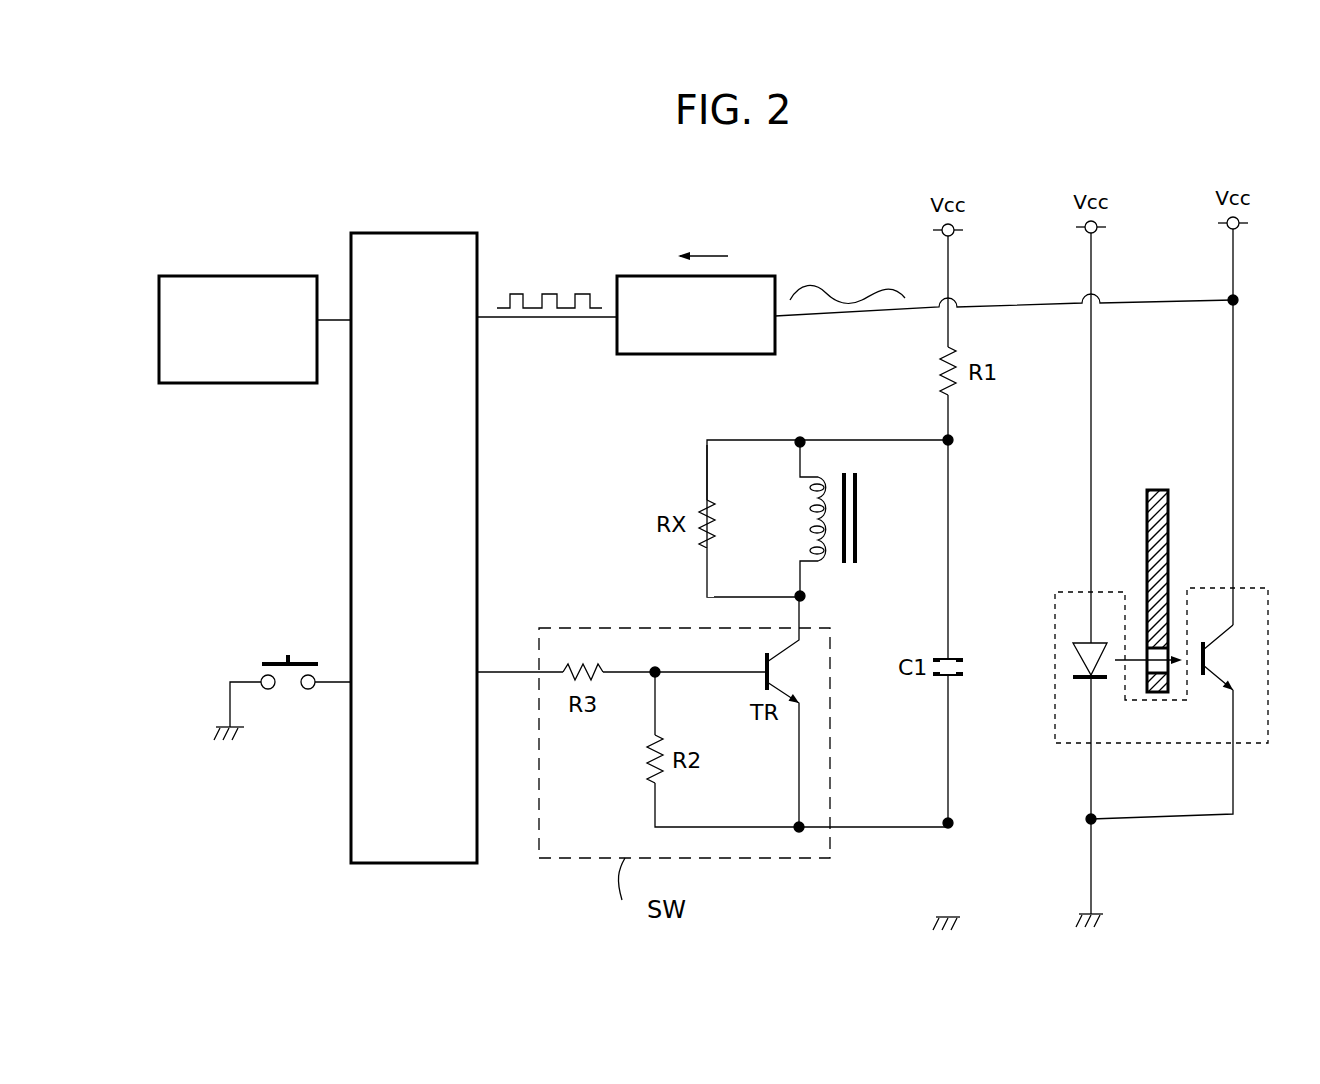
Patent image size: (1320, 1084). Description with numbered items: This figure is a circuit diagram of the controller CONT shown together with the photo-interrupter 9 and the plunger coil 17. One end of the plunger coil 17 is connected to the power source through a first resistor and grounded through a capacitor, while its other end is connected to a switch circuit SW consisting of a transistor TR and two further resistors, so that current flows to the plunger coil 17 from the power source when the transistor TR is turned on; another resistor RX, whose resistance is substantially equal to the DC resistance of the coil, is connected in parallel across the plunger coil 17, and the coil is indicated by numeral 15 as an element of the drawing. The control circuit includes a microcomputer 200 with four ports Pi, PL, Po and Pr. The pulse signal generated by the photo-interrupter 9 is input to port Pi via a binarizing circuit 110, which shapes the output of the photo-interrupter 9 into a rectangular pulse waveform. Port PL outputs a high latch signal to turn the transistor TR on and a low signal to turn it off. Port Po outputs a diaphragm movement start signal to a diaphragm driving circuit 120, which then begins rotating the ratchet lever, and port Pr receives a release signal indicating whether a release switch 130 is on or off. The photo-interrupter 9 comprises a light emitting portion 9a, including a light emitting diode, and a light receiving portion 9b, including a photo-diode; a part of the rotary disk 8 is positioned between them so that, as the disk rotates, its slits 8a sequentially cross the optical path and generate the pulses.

The diaphragm driving circuit 120 is at (273, 248).
The microcomputer 200 is at (446, 206).
The binarizing circuit 110 is at (695, 354).
The release switch 130 is at (286, 690).
The coil 15 is at (830, 464).
The plunger coil 17 is at (842, 516).
The rotary disk 8 is at (1168, 528).
The slit 8a is at (1153, 666).
The photo-interrupter 9 is at (1160, 641).
The light emitting portion 9a is at (1072, 668).
The light receiving portion 9b is at (1225, 660).